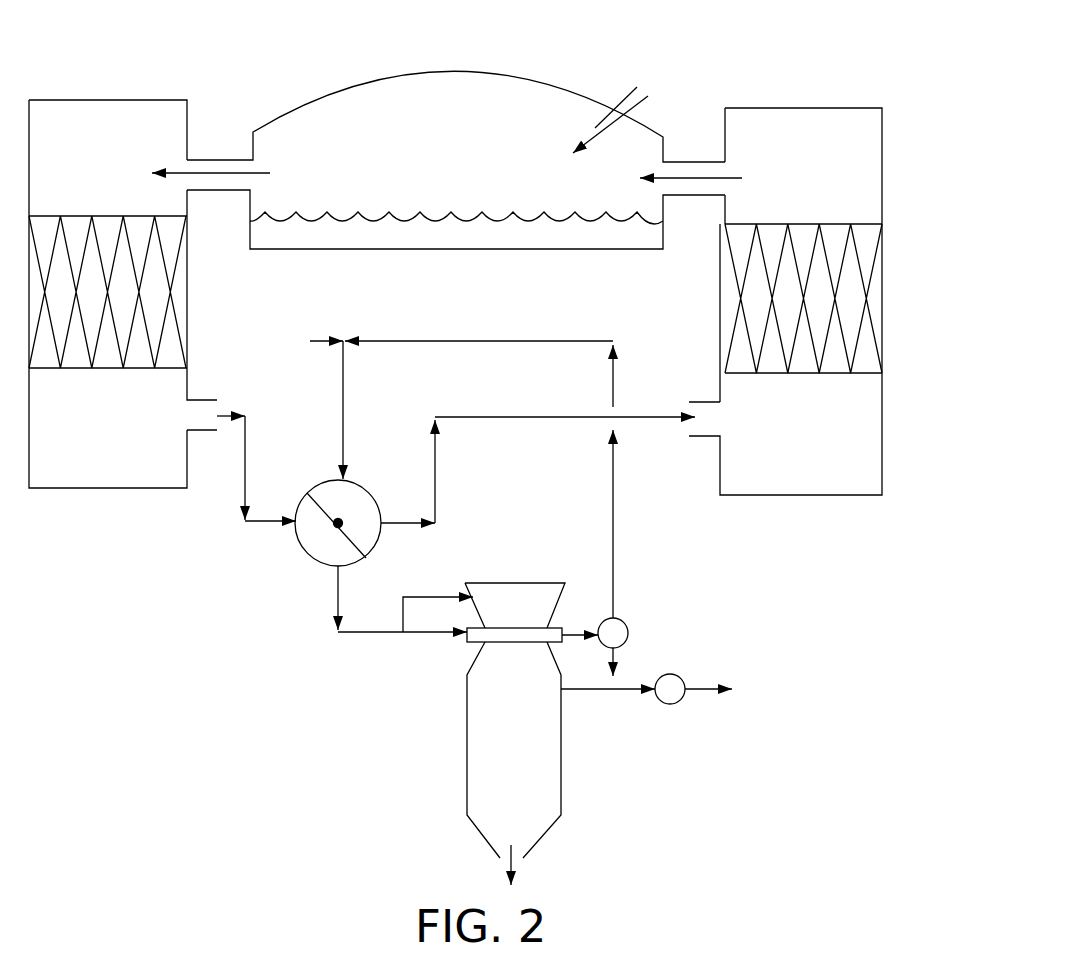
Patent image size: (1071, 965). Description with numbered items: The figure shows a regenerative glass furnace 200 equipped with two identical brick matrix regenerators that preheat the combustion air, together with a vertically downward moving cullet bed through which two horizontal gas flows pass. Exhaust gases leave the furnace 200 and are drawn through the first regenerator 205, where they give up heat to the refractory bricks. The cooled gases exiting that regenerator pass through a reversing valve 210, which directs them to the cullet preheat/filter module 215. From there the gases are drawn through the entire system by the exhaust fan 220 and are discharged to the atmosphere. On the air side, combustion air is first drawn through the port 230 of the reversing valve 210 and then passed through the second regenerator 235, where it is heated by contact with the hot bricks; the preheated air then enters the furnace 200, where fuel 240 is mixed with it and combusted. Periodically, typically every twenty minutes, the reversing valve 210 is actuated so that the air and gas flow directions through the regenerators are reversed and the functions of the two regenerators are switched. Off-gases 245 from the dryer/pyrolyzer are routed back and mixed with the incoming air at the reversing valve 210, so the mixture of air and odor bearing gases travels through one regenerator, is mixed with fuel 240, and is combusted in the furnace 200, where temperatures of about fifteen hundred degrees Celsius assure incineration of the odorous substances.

The furnace 200 is at (453, 88).
The first regenerator 205 is at (110, 117).
The second regenerator 235 is at (795, 125).
The fuel 240 is at (637, 88).
The port 230 is at (340, 478).
The reversing valve 210 is at (301, 548).
The cullet preheat/filter module 215 is at (467, 713).
The off-gases 245 is at (613, 553).
The exhaust fan 220 is at (677, 676).